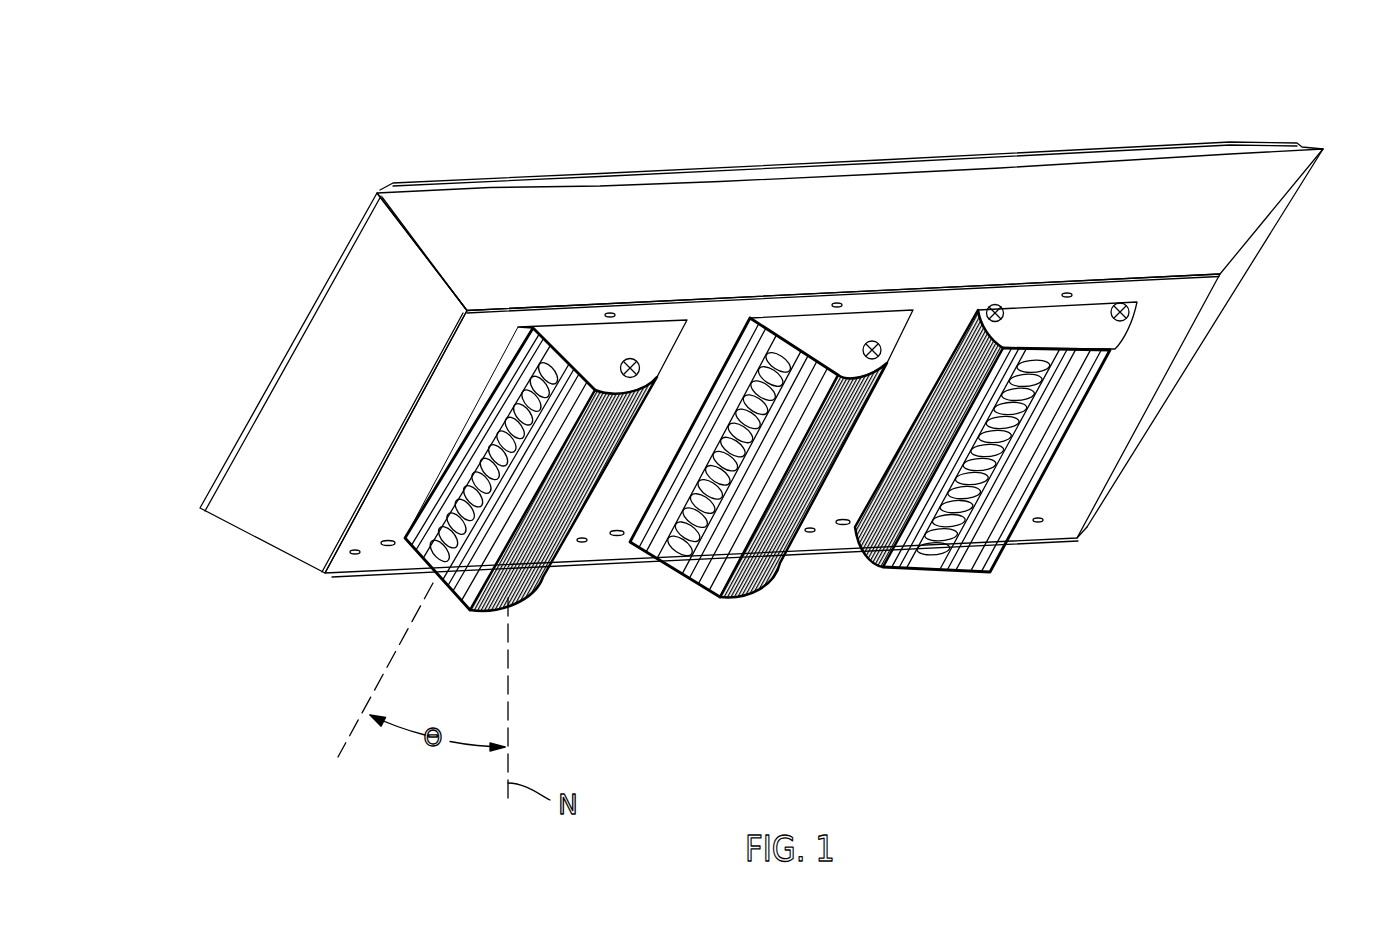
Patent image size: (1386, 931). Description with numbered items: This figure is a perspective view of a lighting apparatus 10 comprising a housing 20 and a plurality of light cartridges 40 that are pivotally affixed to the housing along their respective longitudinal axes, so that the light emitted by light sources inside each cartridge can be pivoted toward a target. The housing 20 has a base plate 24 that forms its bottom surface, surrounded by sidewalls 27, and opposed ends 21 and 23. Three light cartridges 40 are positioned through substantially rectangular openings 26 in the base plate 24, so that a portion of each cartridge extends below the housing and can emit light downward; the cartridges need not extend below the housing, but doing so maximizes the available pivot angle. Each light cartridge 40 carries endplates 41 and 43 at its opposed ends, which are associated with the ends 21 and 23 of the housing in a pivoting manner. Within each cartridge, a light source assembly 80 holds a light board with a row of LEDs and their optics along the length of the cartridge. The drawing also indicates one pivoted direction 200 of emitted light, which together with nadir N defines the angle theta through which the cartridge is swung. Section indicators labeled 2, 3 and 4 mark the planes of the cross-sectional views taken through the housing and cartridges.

The lighting apparatus 10 is at (790, 389).
The housing 20 is at (790, 327).
The end of the housing 21 is at (1038, 190).
The end of the housing 23 is at (1047, 540).
The base plate 24 is at (450, 407).
The opening 26 is at (517, 345).
The sidewall 27 is at (372, 272).
The light cartridge 40 is at (771, 388).
The endplate 41 is at (1063, 325).
The endplate 43 is at (945, 577).
The light source assembly 80 is at (940, 540).
The pivoted direction 200 is at (350, 742).
The section line 2- 2 is at (165, 354).
The section line 3- 3 is at (1195, 415).
The section line 4- 4 is at (705, 147).